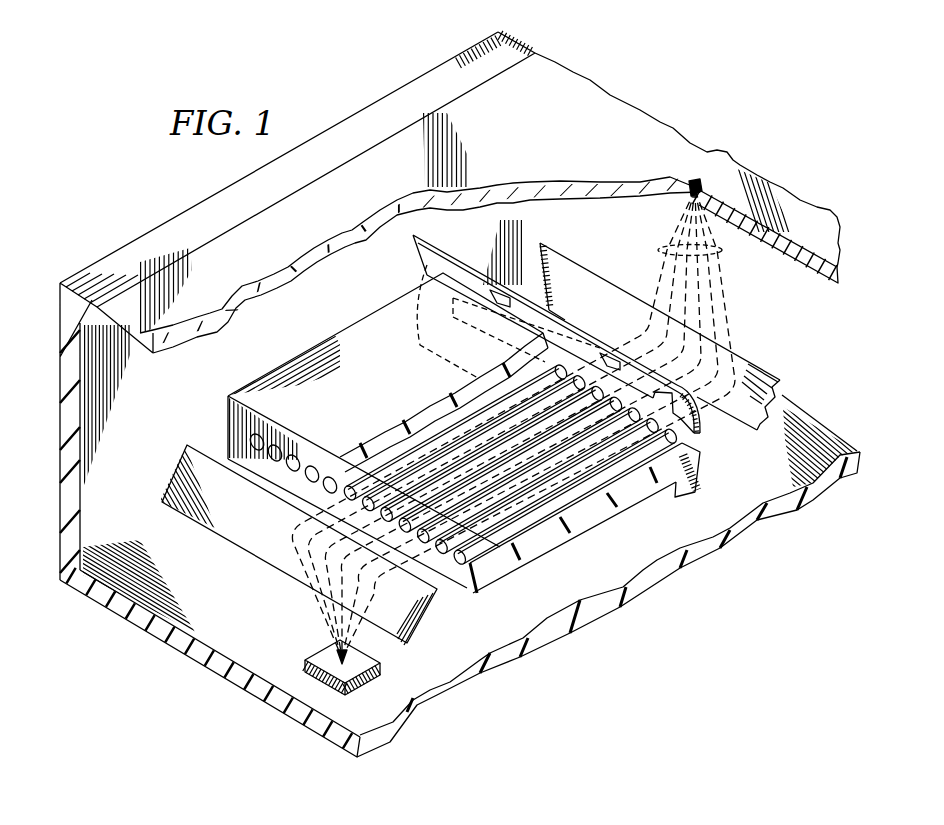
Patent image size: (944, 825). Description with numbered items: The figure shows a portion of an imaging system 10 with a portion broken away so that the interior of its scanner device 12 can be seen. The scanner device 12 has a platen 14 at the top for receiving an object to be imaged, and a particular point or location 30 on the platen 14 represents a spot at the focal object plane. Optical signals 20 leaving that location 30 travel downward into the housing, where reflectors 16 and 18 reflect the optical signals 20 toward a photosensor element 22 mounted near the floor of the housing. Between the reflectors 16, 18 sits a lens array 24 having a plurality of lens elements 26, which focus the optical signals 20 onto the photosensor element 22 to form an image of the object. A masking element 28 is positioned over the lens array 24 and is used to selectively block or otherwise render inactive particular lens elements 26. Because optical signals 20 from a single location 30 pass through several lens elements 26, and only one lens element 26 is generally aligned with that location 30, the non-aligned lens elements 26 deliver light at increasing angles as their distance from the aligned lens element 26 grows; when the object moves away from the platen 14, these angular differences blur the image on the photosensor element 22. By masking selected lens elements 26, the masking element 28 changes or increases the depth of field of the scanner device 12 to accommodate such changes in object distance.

The imaging system 10 is at (720, 57).
The scanner device 12 is at (130, 233).
The platen 14 is at (558, 145).
The reflector 16 is at (780, 379).
The reflector 18 is at (263, 543).
The optical signal 20 is at (660, 250).
The photosensor element 22 is at (323, 657).
The lens array 24 is at (334, 349).
The lens element 26 is at (292, 468).
The masking element 28 is at (410, 258).
The location 30 is at (693, 181).